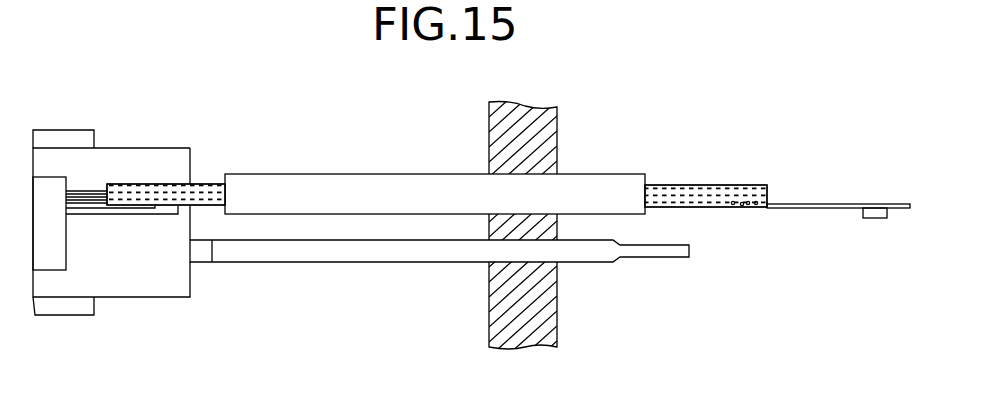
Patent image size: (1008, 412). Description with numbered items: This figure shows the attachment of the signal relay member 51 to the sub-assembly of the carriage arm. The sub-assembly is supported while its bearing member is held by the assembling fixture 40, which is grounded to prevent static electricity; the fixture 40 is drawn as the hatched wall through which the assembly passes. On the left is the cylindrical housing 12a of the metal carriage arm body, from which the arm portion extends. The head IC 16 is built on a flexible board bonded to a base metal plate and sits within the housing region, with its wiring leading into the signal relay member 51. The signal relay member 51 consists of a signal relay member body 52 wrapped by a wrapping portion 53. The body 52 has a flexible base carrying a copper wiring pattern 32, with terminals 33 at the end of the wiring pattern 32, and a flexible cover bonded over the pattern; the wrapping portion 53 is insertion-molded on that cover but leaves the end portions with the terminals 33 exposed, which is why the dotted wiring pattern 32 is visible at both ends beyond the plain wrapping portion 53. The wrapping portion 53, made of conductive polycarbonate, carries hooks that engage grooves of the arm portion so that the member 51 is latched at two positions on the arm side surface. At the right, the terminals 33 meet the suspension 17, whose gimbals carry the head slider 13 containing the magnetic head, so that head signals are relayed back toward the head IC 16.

The cylindrical housing 12a is at (63, 140).
The wiring pattern 32 is at (140, 190).
The head IC 16 is at (52, 250).
The signal relay member 51 is at (437, 144).
The wrapping portion 53 is at (397, 195).
The assembling fixture 40 is at (578, 129).
The signal relay member body 52 is at (690, 168).
The suspension 17 is at (800, 204).
The terminals 33 is at (746, 208).
The head slider 13 is at (876, 218).